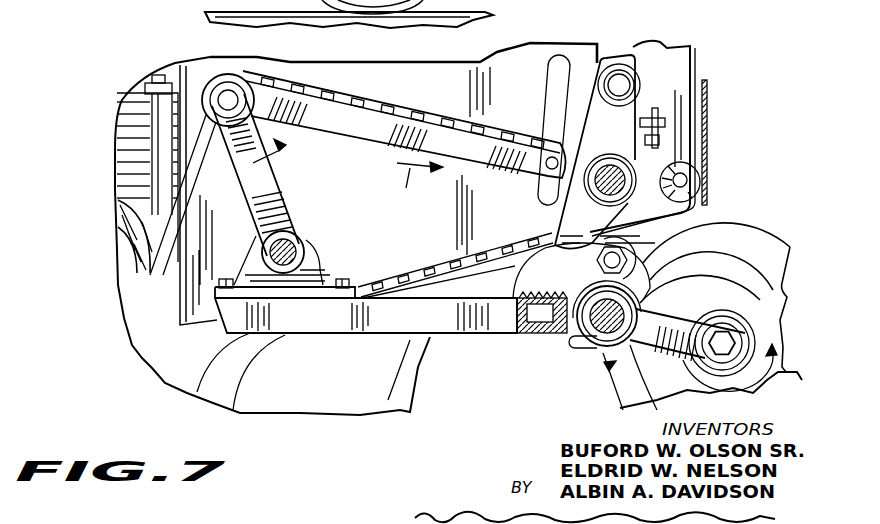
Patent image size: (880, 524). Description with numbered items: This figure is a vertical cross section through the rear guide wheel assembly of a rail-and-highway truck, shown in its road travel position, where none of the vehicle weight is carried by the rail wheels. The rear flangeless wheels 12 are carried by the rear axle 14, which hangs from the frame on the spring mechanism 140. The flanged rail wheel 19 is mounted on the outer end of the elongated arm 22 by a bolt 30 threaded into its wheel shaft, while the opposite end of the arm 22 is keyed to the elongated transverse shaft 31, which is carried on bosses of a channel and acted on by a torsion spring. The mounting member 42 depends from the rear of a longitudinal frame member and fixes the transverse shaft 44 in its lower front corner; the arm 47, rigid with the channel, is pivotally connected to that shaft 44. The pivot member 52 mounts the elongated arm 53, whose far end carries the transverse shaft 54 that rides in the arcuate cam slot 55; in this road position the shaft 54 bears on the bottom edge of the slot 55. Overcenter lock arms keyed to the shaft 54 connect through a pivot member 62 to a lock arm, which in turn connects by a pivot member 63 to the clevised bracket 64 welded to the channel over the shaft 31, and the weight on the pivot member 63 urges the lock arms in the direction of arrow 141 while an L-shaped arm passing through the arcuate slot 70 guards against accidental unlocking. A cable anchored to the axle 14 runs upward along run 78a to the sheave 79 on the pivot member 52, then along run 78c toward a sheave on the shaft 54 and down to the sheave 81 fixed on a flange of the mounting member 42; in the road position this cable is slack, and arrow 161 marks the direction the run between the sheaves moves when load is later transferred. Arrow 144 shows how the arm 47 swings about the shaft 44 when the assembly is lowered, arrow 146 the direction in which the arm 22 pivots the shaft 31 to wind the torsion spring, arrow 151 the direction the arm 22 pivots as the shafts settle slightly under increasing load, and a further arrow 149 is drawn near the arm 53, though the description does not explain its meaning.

The rear flangeless wheels 12 is at (297, 402).
The rear axle 14 is at (128, 270).
The flanged rail wheel 19 is at (757, 243).
The elongated arm 22 is at (620, 387).
The bolt 30 is at (722, 343).
The elongated transverse shaft 31 is at (553, 321).
The mounting member 42 is at (445, 248).
The transverse shaft 44 is at (292, 248).
The arm 47 is at (422, 320).
The pivot member 52 is at (228, 105).
The elongated arm 53 is at (357, 120).
The transverse shaft 54 is at (557, 220).
The arcuate cam slot 55 is at (667, 46).
The pivot member 62 is at (619, 80).
The pivot member 63 is at (648, 257).
The clevised bracket 64 is at (537, 278).
The arcuate slot 70 is at (548, 90).
The cable run 78a is at (167, 220).
The cable run 78c is at (390, 106).
The sheave 79 is at (215, 58).
The sheave 81 is at (707, 182).
The spring mechanism 140 is at (130, 143).
The arrow 141 is at (633, 126).
The arrow 144 is at (322, 270).
The arrow 146 is at (605, 366).
The direction arrow 149 is at (279, 149).
The arrow 151 is at (786, 376).
The arrow 161 is at (414, 187).